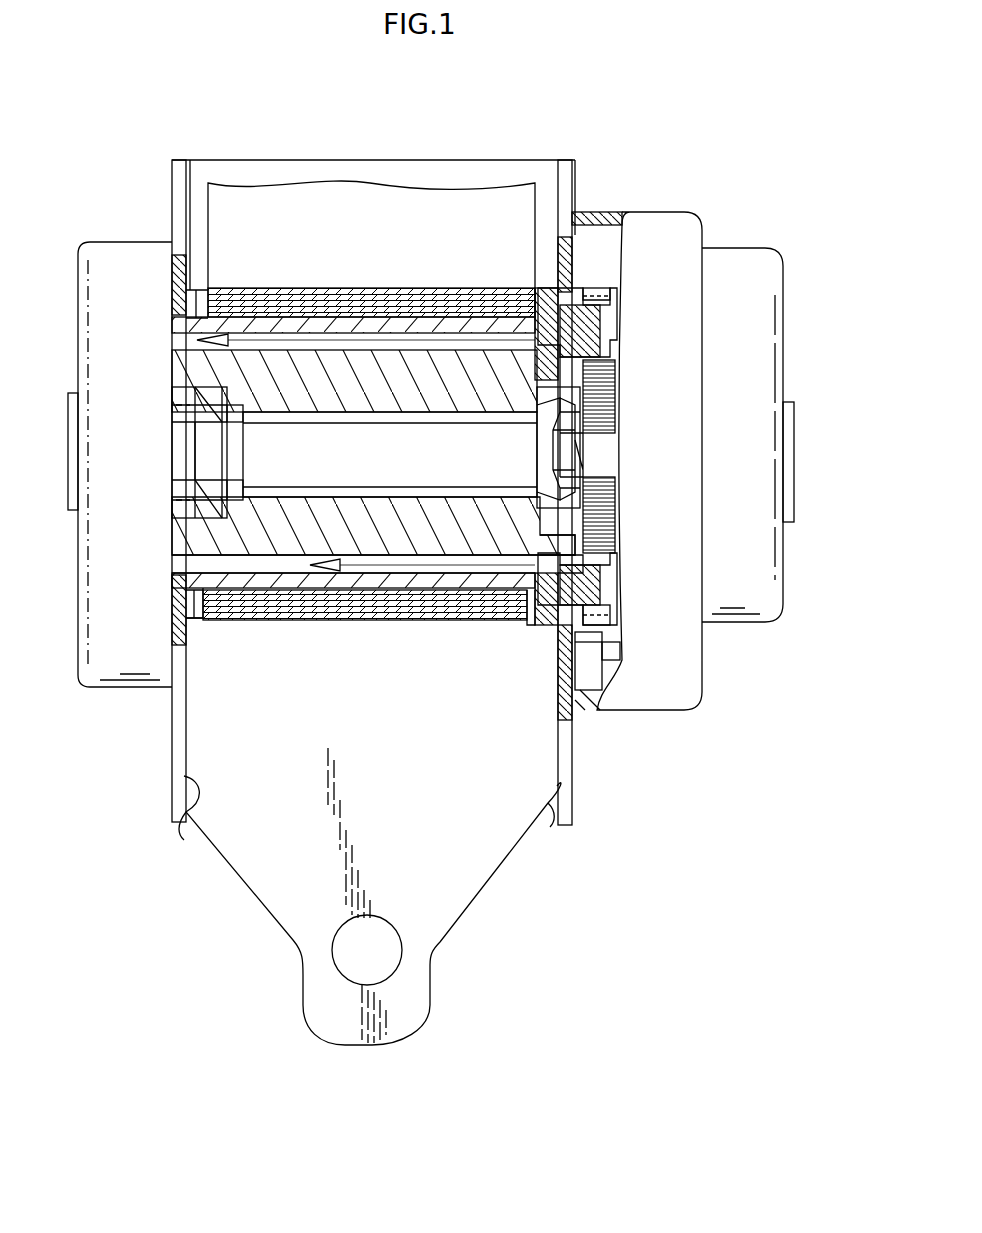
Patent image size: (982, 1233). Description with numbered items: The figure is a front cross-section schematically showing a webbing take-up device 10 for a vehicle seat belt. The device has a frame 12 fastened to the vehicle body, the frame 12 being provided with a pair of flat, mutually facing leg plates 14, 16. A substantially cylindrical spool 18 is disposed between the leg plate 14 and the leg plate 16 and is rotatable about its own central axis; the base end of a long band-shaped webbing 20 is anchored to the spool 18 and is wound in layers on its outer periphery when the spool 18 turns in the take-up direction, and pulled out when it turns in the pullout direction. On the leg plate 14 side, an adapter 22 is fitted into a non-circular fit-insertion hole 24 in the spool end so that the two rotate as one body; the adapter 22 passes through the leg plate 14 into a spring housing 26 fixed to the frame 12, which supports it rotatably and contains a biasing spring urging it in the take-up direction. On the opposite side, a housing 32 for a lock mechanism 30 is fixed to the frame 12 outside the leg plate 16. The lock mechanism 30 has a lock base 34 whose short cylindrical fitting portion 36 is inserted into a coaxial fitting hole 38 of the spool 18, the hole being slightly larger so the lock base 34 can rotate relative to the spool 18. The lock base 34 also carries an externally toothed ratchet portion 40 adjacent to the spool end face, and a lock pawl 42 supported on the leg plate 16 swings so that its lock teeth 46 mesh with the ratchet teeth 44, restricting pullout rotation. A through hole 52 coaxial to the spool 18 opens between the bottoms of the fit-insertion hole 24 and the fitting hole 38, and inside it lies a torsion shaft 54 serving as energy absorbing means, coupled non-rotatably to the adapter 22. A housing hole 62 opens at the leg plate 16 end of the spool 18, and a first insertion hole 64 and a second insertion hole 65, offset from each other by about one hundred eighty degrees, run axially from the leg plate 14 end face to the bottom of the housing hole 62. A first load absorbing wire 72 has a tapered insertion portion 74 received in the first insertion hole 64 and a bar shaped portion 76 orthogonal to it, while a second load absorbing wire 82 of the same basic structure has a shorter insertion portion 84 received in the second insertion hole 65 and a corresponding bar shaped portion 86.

The webbing take-up device 10 is at (618, 130).
The frame 12 is at (230, 890).
The leg plate 14 is at (190, 800).
The leg plate 16 is at (537, 800).
The spool 18 is at (278, 540).
The webbing 20 is at (402, 212).
The adapter 22 is at (180, 443).
The fit-insertion hole 24 is at (176, 482).
The spring housing 26 is at (100, 690).
The lock mechanism 30 is at (741, 205).
The housing 32 is at (682, 700).
The lock base 34 is at (616, 347).
The fitting portion 36 is at (520, 588).
The fitting hole 38 is at (585, 395).
The ratchet portion 40 is at (603, 584).
The lock pawl 42 is at (600, 700).
The ratchet teeth 44 is at (598, 293).
The lock teeth 46 is at (592, 640).
The through hole 52 is at (345, 497).
The torsion shaft 54 is at (330, 435).
The housing hole 62 is at (590, 572).
The first insertion hole 64 is at (412, 352).
The second insertion hole 65 is at (226, 566).
The first load absorbing wire 72 is at (456, 338).
The insertion portion 74 is at (488, 345).
The bar shaped portion 76 is at (585, 330).
The second load absorbing wire 82 is at (390, 583).
The insertion portion 84 is at (405, 578).
The bar shaped portion 86 is at (545, 595).